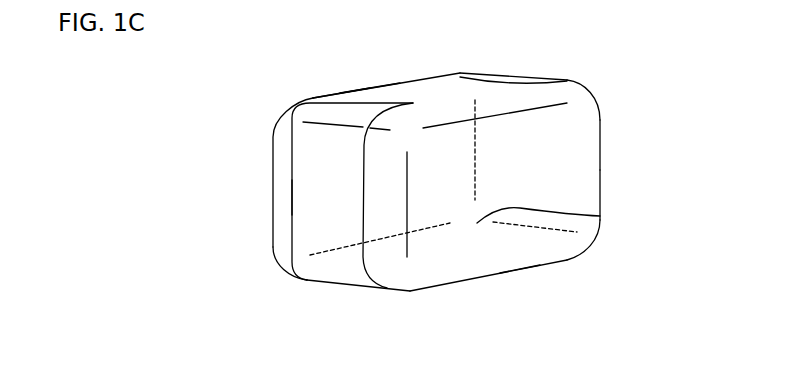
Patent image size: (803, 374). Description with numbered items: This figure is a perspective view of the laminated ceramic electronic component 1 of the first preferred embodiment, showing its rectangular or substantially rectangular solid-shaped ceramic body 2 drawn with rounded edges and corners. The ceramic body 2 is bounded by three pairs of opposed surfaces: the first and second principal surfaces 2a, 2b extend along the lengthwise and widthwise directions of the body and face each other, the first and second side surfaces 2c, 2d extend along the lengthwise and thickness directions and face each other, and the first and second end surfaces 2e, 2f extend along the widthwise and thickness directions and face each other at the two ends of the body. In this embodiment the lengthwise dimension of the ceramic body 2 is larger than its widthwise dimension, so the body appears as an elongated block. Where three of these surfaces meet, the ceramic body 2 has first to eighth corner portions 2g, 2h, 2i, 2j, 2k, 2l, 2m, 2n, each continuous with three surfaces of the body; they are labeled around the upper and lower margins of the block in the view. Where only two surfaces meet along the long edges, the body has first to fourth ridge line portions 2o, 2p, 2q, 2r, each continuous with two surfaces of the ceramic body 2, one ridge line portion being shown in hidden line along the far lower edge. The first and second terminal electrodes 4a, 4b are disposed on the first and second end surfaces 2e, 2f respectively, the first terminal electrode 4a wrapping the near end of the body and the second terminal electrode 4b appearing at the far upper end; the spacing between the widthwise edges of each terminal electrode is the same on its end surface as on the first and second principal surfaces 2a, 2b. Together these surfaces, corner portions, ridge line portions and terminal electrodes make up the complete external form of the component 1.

The laminated ceramic electronic component 1 is at (429, 186).
The ceramic body 2 is at (429, 186).
The first principal surface 2a is at (433, 88).
The second principal surface 2b is at (482, 277).
The first side surface 2c is at (590, 168).
The second side surface 2d is at (340, 92).
The first end surface 2e is at (282, 167).
The second end surface 2f is at (600, 140).
The first corner portion 2g is at (402, 123).
The second corner portion 2h is at (588, 90).
The third corner portion 2i is at (293, 120).
The fourth corner portion 2j is at (473, 70).
The fifth corner portion 2k is at (403, 293).
The sixth corner portion 2l is at (590, 243).
The seventh corner portion 2m is at (282, 268).
The eighth corner portion 2n is at (600, 216).
The first ridge line portion 2o is at (537, 105).
The second ridge line portion 2p is at (373, 90).
The third ridge line portion 2q is at (518, 260).
The fourth ridge line portion 2r is at (333, 248).
The first terminal electrode 4a is at (292, 197).
The second terminal electrode 4b is at (513, 80).